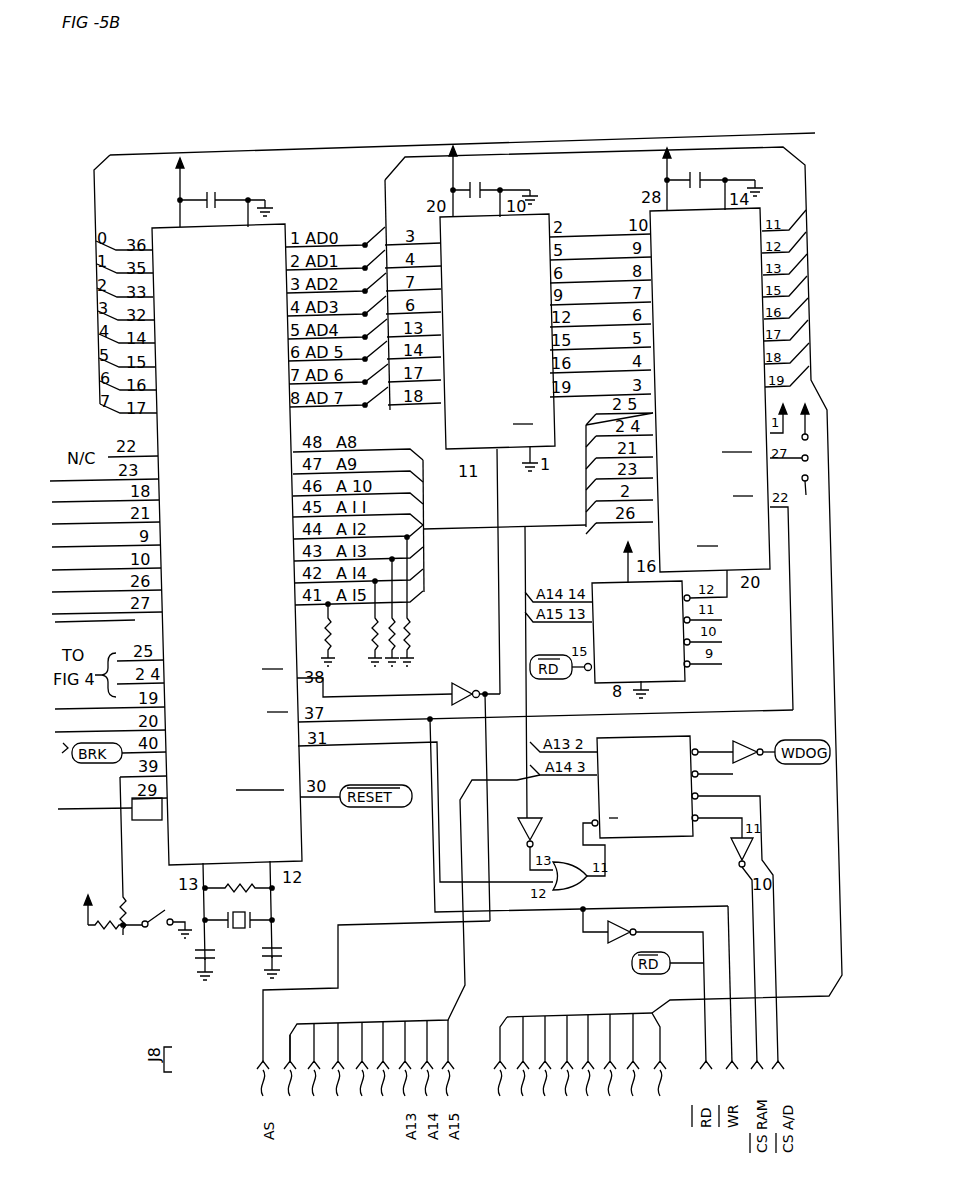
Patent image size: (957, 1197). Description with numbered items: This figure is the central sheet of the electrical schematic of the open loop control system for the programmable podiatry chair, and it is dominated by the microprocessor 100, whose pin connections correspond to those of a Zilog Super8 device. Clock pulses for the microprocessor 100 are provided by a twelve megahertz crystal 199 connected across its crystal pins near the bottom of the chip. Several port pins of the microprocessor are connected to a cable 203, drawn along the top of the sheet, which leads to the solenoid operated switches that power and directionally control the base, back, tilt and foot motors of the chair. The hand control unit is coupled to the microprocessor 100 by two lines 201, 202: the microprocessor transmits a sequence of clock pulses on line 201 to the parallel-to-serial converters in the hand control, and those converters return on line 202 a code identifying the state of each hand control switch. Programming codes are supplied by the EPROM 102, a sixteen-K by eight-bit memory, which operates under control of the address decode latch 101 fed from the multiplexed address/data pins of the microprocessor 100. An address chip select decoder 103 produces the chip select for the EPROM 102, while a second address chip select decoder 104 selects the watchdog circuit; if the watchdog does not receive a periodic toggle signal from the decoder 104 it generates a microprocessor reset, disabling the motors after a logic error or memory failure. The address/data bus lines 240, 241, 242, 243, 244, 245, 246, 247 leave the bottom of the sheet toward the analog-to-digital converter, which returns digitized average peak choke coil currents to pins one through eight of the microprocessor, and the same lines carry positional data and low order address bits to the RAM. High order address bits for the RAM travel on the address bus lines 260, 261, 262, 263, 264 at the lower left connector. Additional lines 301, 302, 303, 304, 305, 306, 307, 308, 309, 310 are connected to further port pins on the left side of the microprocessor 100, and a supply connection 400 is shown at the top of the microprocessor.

The microprocessor 100 is at (283, 221).
The address decode latch 101 is at (538, 212).
The EPROM 102 is at (650, 210).
The address chip select decoder 103 is at (665, 685).
The address chip select decoder 104 is at (662, 742).
The crystal 199 is at (240, 914).
The line 201 is at (128, 700).
The line 202 is at (118, 661).
The cable 203 is at (440, 143).
The address/data bus line 240 is at (500, 1027).
The address/data bus line 241 is at (517, 1014).
The address/data bus line 242 is at (542, 1016).
The address/data bus line 243 is at (573, 1016).
The address/data bus line 244 is at (586, 1015).
The address/data bus line 245 is at (610, 1014).
The address/data bus line 246 is at (633, 1014).
The address/data bus line 247 is at (661, 1033).
The address bus line 260 is at (290, 1034).
The address bus line 261 is at (314, 1023).
The address bus line 262 is at (347, 1020).
The address bus line 263 is at (363, 1022).
The address bus line 264 is at (378, 1020).
The input line 301 is at (112, 556).
The input line 302 is at (114, 578).
The input line 303 is at (114, 600).
The input line 304 is at (118, 627).
The input line 305 is at (114, 533).
The potentiometer input 306 is at (115, 853).
The input line 307 is at (119, 720).
The input line 308 is at (108, 816).
The input line 309 is at (116, 510).
The input line 310 is at (114, 487).
The power supply filter 400 is at (257, 230).